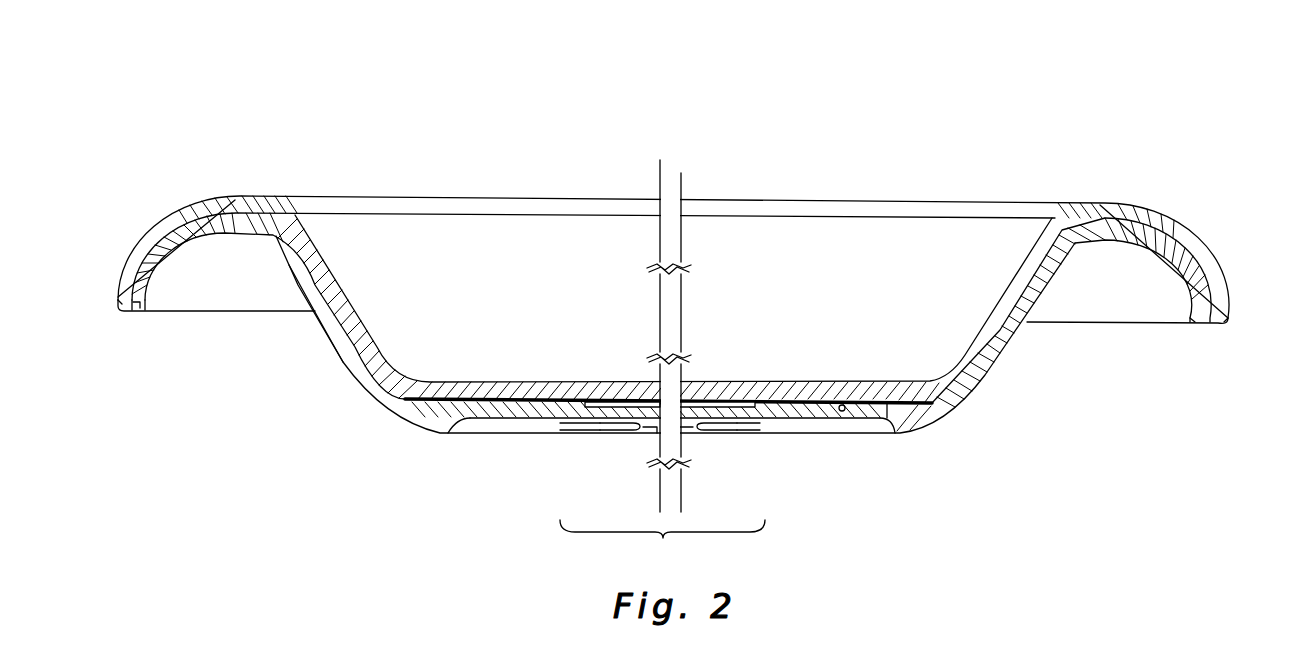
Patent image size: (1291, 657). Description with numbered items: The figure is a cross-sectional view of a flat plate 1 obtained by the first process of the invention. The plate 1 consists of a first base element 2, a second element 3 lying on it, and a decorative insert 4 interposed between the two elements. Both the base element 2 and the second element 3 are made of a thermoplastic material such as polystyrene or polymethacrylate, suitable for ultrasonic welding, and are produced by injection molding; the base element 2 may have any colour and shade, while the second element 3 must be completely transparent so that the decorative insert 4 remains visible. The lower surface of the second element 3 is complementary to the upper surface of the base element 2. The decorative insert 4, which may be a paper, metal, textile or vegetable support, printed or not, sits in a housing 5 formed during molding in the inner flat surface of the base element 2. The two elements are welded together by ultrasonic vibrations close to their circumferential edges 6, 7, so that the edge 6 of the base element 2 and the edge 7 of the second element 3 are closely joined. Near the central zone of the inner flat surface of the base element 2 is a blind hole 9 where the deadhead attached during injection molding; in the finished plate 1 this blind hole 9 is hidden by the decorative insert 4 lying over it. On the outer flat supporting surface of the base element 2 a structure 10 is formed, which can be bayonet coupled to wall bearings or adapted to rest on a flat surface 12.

The flat plate 1 is at (952, 138).
The first base element 2 is at (963, 400).
The second element 3 is at (950, 378).
The decorative insert 4 is at (783, 403).
The housing 5 is at (847, 405).
The circumferential edge of the base element 6 is at (1195, 325).
The circumferential edge of the second element 7 is at (1228, 320).
The blind hole 9 is at (732, 405).
The structure 10 is at (707, 432).
The flat surface 12 is at (657, 434).